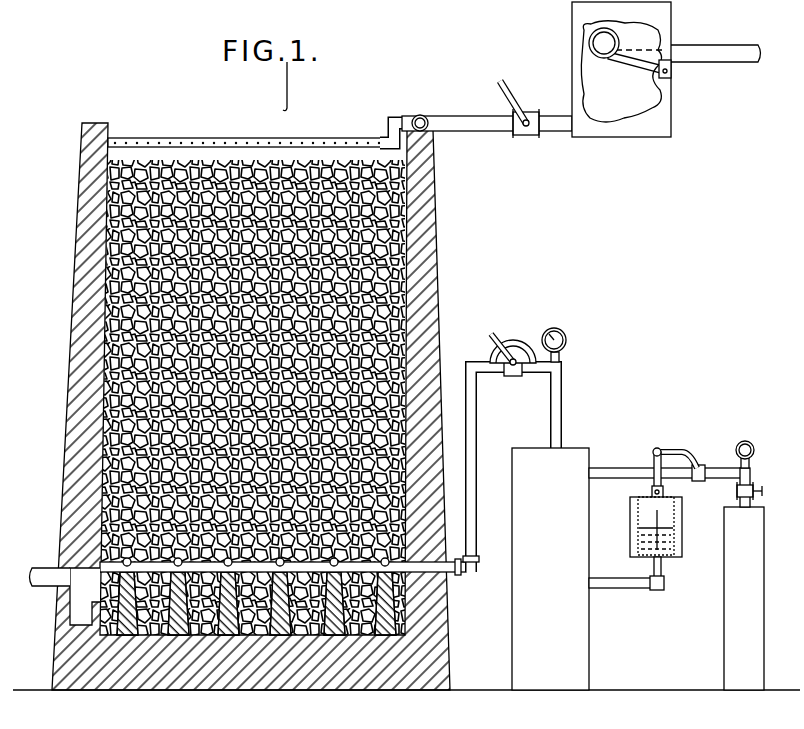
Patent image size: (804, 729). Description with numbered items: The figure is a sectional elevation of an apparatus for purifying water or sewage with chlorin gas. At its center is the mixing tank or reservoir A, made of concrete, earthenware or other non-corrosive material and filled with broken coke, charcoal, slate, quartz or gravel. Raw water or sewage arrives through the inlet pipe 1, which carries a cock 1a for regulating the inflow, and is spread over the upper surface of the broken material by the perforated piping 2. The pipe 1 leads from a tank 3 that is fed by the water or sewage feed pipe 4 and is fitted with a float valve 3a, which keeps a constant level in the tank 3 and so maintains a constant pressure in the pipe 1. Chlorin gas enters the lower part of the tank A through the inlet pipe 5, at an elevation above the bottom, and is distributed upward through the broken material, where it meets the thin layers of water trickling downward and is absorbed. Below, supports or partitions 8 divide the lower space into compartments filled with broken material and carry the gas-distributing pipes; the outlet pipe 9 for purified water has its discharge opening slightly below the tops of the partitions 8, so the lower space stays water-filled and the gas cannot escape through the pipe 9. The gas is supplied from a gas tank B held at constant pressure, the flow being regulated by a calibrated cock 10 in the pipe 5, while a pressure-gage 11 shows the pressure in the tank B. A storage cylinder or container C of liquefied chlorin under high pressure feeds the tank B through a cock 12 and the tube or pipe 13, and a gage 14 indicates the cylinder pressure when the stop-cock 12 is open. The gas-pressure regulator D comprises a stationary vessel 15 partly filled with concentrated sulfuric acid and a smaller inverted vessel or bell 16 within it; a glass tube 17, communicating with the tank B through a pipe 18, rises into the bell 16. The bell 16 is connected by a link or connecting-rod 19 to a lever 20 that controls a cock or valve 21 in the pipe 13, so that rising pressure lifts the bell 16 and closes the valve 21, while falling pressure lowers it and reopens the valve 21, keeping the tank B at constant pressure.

The inlet pipe 1 is at (465, 118).
The cock 1a is at (519, 102).
The perforated piping 2 is at (230, 143).
The tank 3 is at (621, 69).
The float valve 3a is at (598, 40).
The water or sewage feed pipe 4 is at (732, 58).
The inlet pipe for chlorin gas 5 is at (477, 481).
The supports or partitions 8 is at (410, 611).
The outlet pipe 9 is at (82, 598).
The calibrated cock 10 is at (522, 343).
The pressure-gage 11 is at (567, 346).
The cock 12 is at (763, 491).
The tube or pipe 13 is at (718, 470).
The gage 14 is at (754, 449).
The stationary vessel 15 is at (677, 531).
The inverted vessel or bell 16 is at (680, 503).
The glass tube 17 is at (663, 566).
The pipe 18 is at (665, 585).
The link or connecting-rod 19 is at (656, 462).
The lever 20 is at (679, 452).
The cock or valve 21 is at (698, 466).
The mixing tank or reservoir A is at (410, 262).
The gas tank B is at (550, 569).
The storage cylinder or container C is at (744, 598).
The gas-pressure regulator D is at (612, 526).